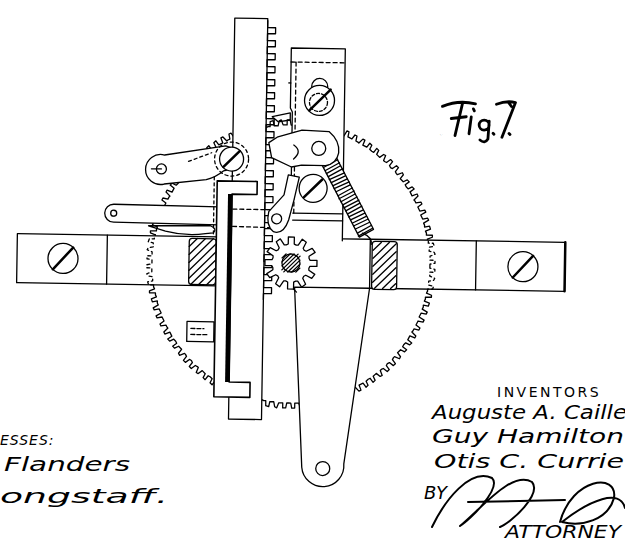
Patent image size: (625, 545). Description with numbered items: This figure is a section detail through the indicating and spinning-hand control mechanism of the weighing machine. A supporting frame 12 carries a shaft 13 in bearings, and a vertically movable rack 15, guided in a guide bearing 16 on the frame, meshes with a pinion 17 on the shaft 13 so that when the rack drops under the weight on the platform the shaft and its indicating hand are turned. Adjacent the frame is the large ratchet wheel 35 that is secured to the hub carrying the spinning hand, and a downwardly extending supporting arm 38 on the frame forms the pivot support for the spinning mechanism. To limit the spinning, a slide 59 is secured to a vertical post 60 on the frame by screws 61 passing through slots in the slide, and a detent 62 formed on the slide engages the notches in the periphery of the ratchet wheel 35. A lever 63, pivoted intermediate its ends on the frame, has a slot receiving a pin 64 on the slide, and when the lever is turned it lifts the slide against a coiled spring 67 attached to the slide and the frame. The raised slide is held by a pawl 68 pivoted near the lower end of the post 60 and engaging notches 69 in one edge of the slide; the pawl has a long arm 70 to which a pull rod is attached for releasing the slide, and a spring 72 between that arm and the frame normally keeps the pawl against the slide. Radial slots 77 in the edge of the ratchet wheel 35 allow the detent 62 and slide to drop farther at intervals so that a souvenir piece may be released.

The supporting frame 12 is at (372, 292).
The shaft 13 is at (318, 264).
The rack 15 is at (231, 31).
The guide bearing 16 is at (215, 295).
The pinion 17 is at (296, 291).
The large ratchet wheel 35 is at (432, 214).
The supporting arm 38 is at (352, 410).
The slide 59 is at (316, 48).
The post 60 is at (332, 215).
The screws 61 is at (333, 103).
The detent 62 is at (288, 83).
The lever 63 is at (152, 158).
The pin 64 is at (332, 146).
The coiled spring 67 is at (327, 180).
The pawl 68 is at (332, 209).
The notches 69 is at (264, 150).
The long arm 70 is at (110, 216).
The spring 72 is at (187, 277).
The radial slots 77 is at (288, 124).